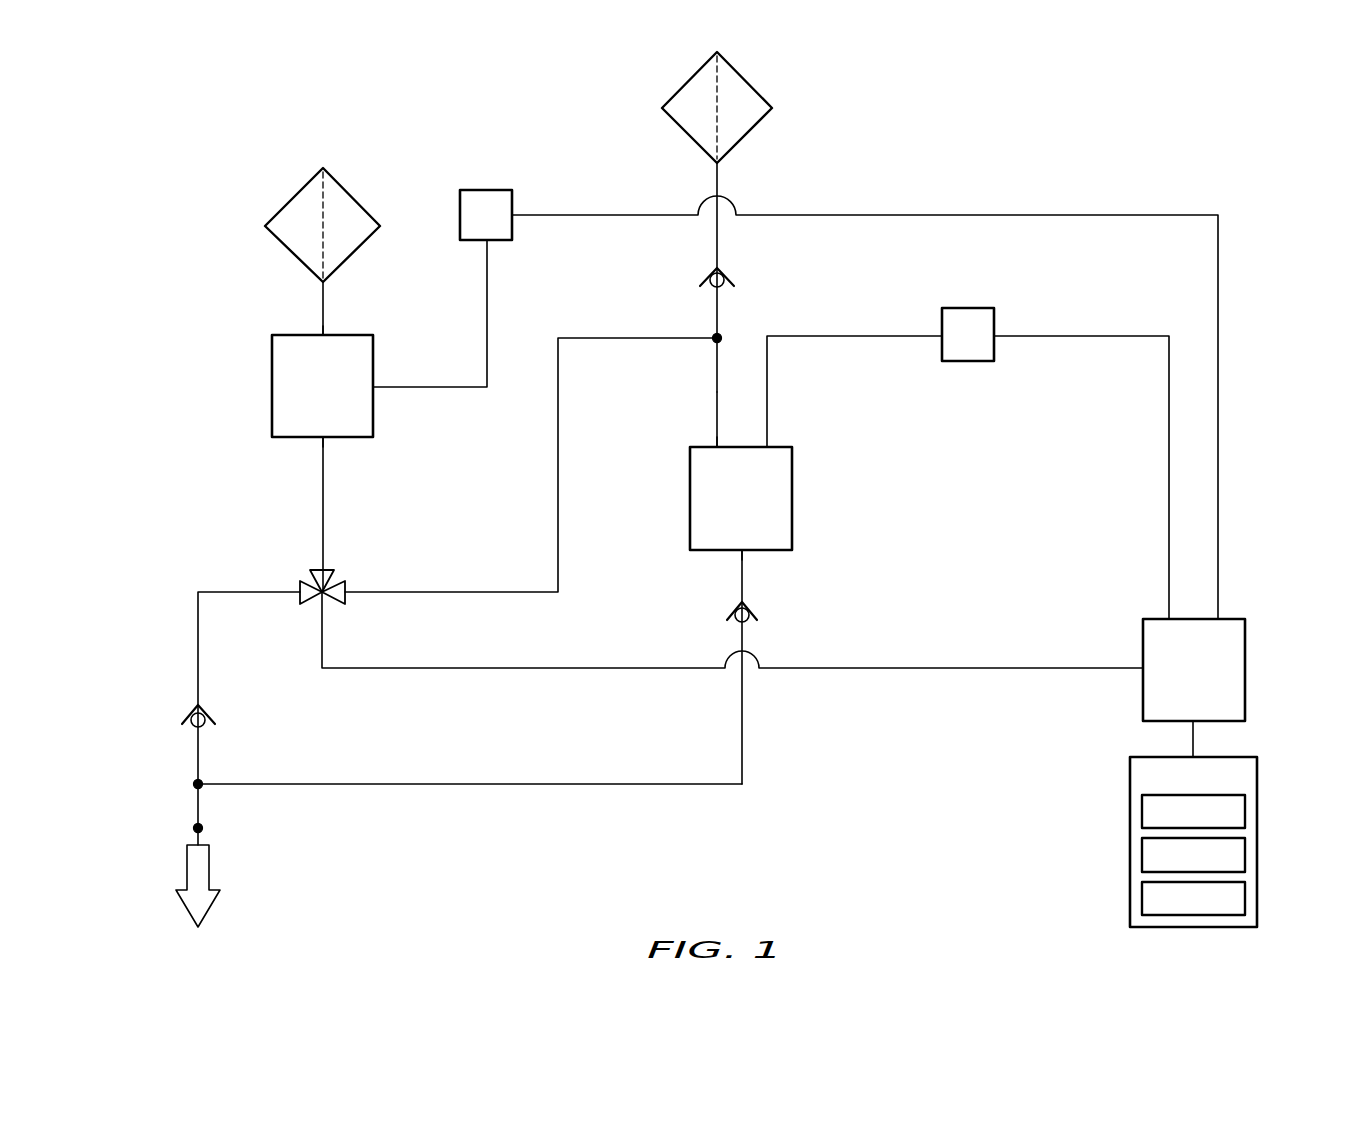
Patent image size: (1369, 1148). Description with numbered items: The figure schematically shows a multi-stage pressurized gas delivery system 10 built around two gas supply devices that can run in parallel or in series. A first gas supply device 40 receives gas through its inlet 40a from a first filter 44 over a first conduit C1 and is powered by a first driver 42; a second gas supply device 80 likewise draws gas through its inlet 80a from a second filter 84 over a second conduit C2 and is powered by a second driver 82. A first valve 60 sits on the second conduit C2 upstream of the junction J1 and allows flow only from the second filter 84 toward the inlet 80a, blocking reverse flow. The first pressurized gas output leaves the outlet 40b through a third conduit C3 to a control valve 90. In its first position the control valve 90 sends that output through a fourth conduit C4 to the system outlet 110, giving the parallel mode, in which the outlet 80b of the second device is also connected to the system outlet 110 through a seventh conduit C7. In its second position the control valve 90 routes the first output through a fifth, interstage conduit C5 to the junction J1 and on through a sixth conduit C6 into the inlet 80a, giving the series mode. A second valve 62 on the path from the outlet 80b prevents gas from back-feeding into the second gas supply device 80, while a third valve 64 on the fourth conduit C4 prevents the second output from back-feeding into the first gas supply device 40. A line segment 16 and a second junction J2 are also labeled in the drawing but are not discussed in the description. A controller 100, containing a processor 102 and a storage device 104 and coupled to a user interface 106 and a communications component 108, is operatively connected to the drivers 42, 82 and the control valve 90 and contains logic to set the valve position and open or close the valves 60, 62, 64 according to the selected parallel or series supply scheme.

The multi-stage pressurized gas delivery system 10 is at (146, 190).
The main fluid line 16 is at (715, 366).
The first gas supply device 40 is at (272, 387).
The inlet of the first gas supply device 40a is at (323, 333).
The outlet of the first gas supply device 40b is at (323, 438).
The first driver 42 is at (483, 187).
The first filter 44 is at (288, 202).
The first valve 60 is at (732, 277).
The second valve 62 is at (727, 616).
The third valve 64 is at (215, 720).
The second gas supply device 80 is at (690, 497).
The inlet of the second gas supply device 80a is at (716, 445).
The outlet of the second gas supply device 80b is at (740, 552).
The second driver 82 is at (965, 361).
The second filter 84 is at (753, 82).
The control valve 90 is at (308, 580).
The controller 100 is at (1257, 770).
The processor 102 is at (1142, 810).
The storage device 104 is at (1142, 858).
The user interface 106 is at (1142, 903).
The communications component 108 is at (1245, 668).
The system outlet 110 is at (203, 828).
The first conduit C1 is at (323, 302).
The second conduit C2 is at (712, 182).
The third conduit C3 is at (323, 500).
The fourth conduit C4 is at (197, 625).
The fifth conduit C5 is at (557, 475).
The sixth conduit C6 is at (715, 400).
The seventh conduit C7 is at (744, 736).
The junction J1 is at (714, 336).
The second junction J2 is at (195, 785).